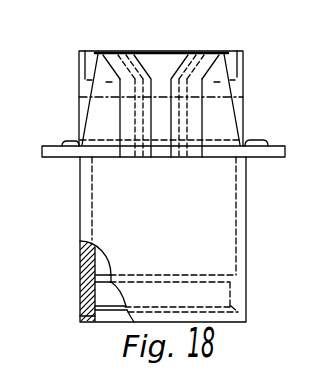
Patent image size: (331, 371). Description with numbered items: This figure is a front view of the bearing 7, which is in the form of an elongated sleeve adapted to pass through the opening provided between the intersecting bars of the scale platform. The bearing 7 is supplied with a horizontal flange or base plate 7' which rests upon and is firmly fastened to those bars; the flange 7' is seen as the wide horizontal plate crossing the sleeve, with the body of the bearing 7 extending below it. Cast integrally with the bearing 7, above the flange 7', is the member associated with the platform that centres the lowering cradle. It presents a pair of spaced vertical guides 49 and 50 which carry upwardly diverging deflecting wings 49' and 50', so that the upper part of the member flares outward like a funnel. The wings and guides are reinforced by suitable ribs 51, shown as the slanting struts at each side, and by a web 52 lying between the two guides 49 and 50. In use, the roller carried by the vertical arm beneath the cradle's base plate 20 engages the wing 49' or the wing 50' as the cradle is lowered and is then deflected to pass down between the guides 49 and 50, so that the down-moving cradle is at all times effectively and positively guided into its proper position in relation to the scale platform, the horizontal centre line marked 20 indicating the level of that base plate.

The bearing 7 is at (149, 245).
The horizontal flange or base plate 7' is at (161, 163).
The base plate 20 is at (79, 97).
The vertical guide 49 is at (115, 118).
The deflecting wing 49' is at (126, 54).
The vertical guide 50 is at (226, 118).
The deflecting wing 50' is at (194, 54).
The ribs 51 is at (88, 111).
The web 52 is at (165, 130).